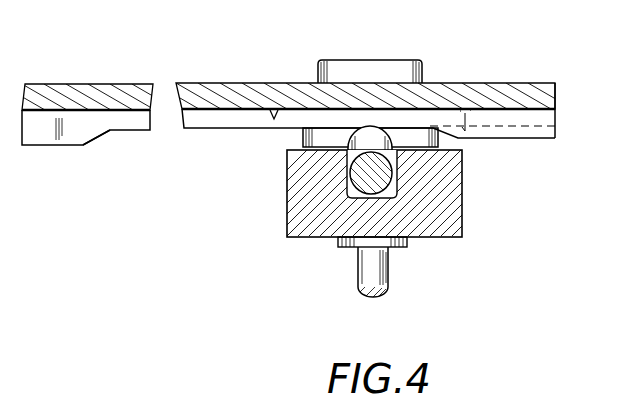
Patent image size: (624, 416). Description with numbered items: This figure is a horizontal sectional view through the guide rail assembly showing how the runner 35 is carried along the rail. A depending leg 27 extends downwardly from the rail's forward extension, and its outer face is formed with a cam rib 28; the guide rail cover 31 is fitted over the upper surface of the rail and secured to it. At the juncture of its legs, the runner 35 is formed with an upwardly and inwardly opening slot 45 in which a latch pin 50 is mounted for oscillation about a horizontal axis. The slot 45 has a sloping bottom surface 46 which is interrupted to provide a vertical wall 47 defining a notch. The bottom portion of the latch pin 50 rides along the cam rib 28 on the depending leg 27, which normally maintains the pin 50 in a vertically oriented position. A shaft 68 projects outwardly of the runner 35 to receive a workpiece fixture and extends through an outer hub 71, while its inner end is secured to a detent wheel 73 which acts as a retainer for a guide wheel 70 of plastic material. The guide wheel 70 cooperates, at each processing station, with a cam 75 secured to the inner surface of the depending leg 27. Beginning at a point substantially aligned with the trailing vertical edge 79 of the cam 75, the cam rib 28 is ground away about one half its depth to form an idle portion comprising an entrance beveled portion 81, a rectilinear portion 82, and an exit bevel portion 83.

The depending leg 27 is at (545, 98).
The cam rib 28 is at (50, 147).
The guide rail cover 31 is at (202, 76).
The runner 35 is at (278, 203).
The slot 45 is at (420, 210).
The bottom surface 46 is at (308, 223).
The vertical wall 47 is at (350, 199).
The latch pin 50 is at (393, 190).
The shaft 68 is at (378, 276).
The guide wheel 70 is at (420, 127).
The outer hub 71 is at (404, 245).
The detent wheel 73 is at (368, 65).
The cam 75 is at (517, 77).
The trailing vertical edge 79 is at (267, 102).
The entrance beveled portion 81 is at (449, 150).
The rectilinear portion 82 is at (232, 130).
The exit bevel portion 83 is at (97, 143).